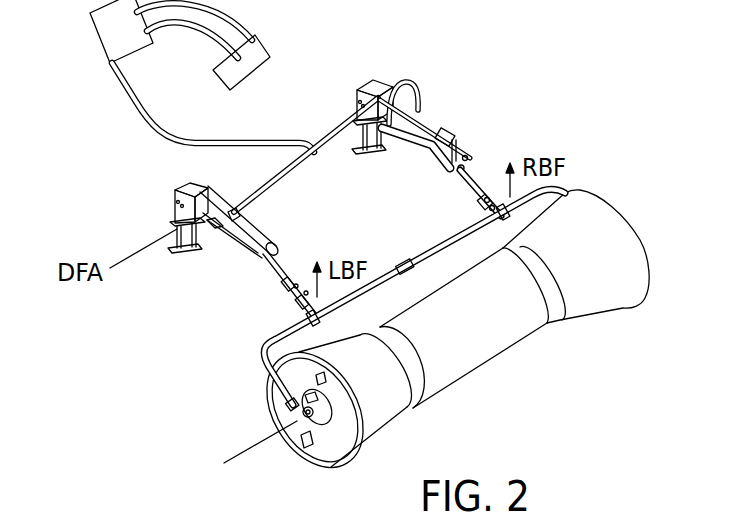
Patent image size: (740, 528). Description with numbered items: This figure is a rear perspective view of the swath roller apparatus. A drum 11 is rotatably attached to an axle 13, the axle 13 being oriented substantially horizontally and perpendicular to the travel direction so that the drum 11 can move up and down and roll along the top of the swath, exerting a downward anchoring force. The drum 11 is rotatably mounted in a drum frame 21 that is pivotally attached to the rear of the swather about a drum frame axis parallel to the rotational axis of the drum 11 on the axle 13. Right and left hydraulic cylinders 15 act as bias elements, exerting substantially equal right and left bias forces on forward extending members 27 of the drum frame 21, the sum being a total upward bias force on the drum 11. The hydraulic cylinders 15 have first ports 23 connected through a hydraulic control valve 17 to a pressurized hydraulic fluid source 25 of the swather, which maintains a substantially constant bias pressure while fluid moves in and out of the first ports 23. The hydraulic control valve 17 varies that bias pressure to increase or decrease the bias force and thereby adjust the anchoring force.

The drum 11 is at (536, 329).
The axle 13 is at (332, 464).
The hydraulic cylinders 15 is at (418, 109).
The hydraulic control valve 17 is at (97, 41).
The drum frame 21 is at (263, 350).
The first ports 23 is at (239, 215).
The pressurized hydraulic fluid source 25 is at (271, 46).
The forward extending members 27 is at (474, 185).